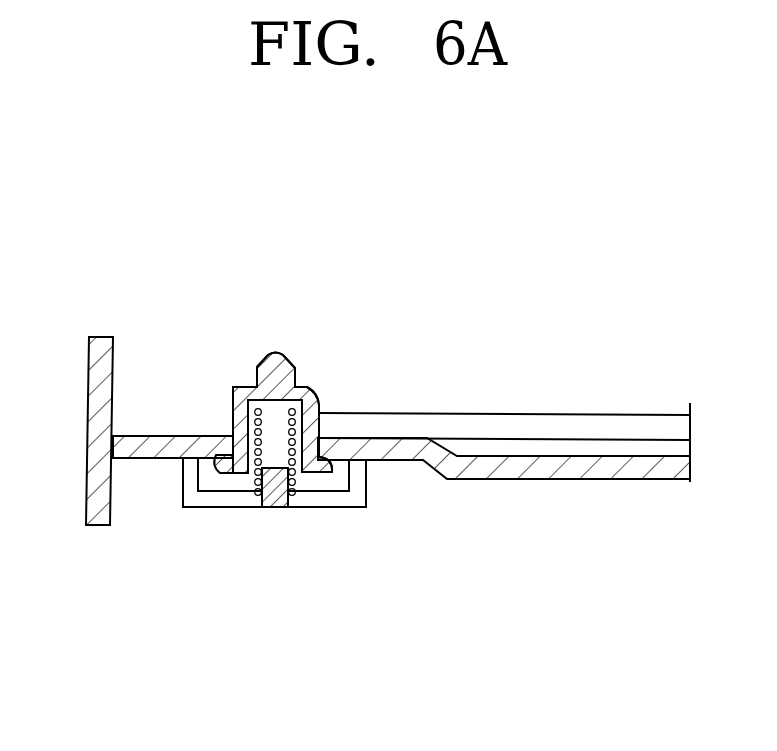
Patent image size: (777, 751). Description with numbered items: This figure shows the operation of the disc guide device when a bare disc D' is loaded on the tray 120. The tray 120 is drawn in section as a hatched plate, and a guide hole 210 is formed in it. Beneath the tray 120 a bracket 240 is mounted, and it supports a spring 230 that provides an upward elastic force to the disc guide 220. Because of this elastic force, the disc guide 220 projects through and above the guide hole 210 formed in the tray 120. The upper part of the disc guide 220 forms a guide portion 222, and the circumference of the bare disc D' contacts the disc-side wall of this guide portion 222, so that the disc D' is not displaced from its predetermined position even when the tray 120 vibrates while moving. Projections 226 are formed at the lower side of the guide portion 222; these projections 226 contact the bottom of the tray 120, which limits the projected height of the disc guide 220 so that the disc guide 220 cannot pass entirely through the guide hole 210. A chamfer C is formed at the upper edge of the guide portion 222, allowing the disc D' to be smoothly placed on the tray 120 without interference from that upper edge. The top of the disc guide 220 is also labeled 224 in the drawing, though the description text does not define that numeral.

The tray 120 is at (400, 458).
The bare disc D' is at (504, 403).
The disc guide 220 is at (299, 412).
The hook head 224 is at (277, 354).
The guide hole 210 is at (233, 452).
The guide portion 222 is at (330, 412).
The chamfer C is at (317, 397).
The projections 226 is at (223, 478).
The spring 230 is at (291, 493).
The bracket 240 is at (200, 502).